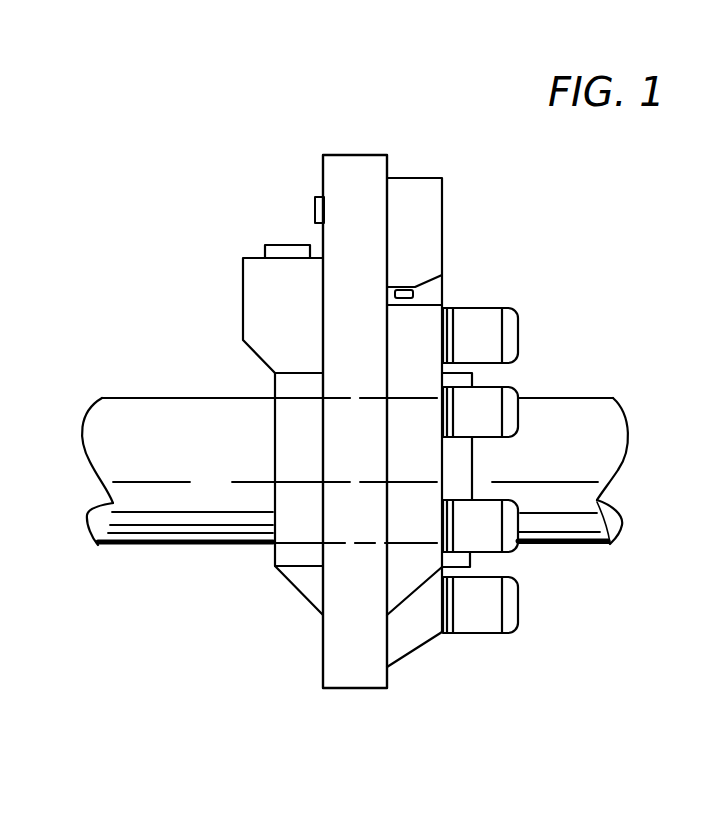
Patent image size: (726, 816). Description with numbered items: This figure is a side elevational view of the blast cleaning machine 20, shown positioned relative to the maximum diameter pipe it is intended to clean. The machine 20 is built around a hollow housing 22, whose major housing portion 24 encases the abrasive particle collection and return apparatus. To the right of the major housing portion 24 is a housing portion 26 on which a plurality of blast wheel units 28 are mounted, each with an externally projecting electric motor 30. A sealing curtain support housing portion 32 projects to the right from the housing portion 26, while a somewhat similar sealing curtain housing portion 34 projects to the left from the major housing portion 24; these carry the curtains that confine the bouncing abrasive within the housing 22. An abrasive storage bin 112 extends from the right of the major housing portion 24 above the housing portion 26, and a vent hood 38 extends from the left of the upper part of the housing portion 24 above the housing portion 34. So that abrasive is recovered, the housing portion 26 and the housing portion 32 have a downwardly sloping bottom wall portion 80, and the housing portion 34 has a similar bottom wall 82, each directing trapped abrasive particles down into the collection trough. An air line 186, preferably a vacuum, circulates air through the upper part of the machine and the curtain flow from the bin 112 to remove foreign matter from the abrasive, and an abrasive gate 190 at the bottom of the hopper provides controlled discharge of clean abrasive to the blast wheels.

The cleaning machine 20 is at (512, 287).
The hollow housing 22 is at (393, 692).
The major housing portion 24 is at (346, 684).
The housing portion 26 is at (437, 637).
The blast wheel unit 28 is at (527, 369).
The electric motor 30 is at (508, 333).
The sealing curtain support housing portion 32 is at (467, 480).
The sealing curtain housing portion 34 is at (286, 495).
The vent hood 38 is at (254, 327).
The downwardly sloping bottom wall portion 80 is at (400, 590).
The bottom wall 82 is at (302, 592).
The abrasive storage bin 112 is at (437, 225).
The air line 186 is at (265, 250).
The abrasive gate 190 is at (415, 296).